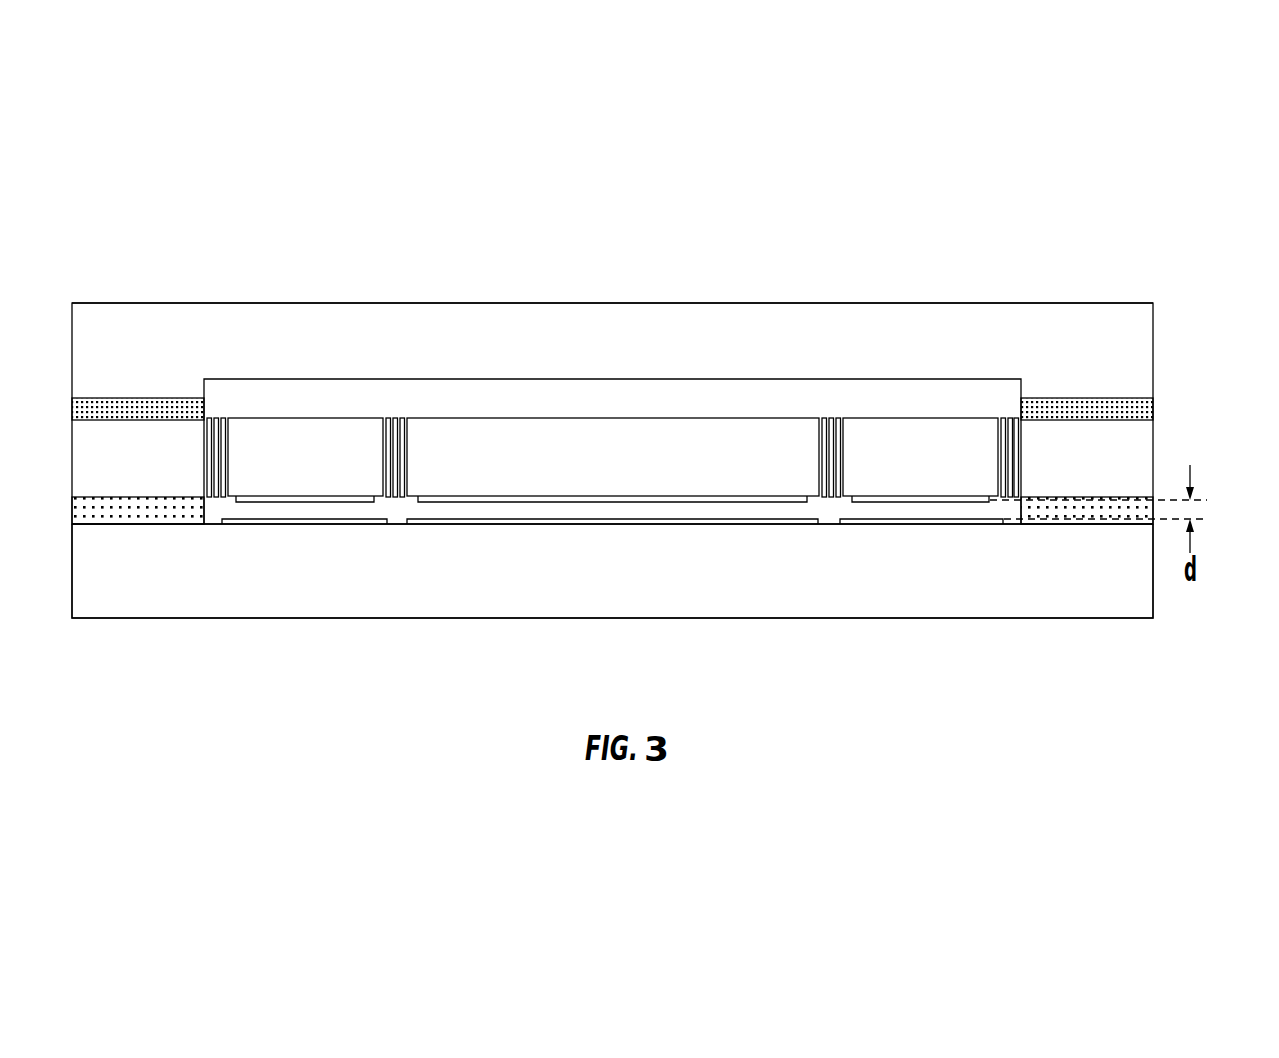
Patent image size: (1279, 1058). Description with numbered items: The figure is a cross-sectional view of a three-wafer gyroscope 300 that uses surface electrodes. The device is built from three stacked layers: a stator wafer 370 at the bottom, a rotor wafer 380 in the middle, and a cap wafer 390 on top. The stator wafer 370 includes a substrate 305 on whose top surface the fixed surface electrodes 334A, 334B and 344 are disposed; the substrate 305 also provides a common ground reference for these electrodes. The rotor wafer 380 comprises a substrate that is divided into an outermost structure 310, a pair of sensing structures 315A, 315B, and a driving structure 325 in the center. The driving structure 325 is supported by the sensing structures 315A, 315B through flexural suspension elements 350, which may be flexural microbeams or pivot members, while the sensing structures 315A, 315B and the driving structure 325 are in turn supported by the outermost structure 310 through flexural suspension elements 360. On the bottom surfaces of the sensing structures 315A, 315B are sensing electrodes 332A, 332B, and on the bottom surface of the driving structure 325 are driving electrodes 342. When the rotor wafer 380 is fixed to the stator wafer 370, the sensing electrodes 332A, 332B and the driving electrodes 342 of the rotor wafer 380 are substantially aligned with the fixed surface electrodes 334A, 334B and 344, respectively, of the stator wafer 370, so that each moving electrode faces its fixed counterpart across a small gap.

The three-wafer gyroscope 300 is at (438, 122).
The substrate 305 is at (634, 588).
The outermost structure 310 is at (158, 471).
The sensing structure 315A is at (327, 471).
The sensing structure 315B is at (947, 471).
The driving structure 325 is at (633, 471).
The sensing electrode 332A is at (305, 502).
The sensing electrode 332B is at (918, 502).
The fixed surface electrode 334A is at (267, 525).
The fixed surface electrode 334B is at (958, 524).
The driving electrode 342 is at (768, 502).
The fixed surface electrode 344 is at (458, 524).
The flexural suspension elements 350 is at (398, 406).
The flexural suspension elements 360 is at (218, 406).
The stator wafer 370 is at (1166, 593).
The rotor wafer 380 is at (1166, 456).
The cap wafer 390 is at (692, 362).